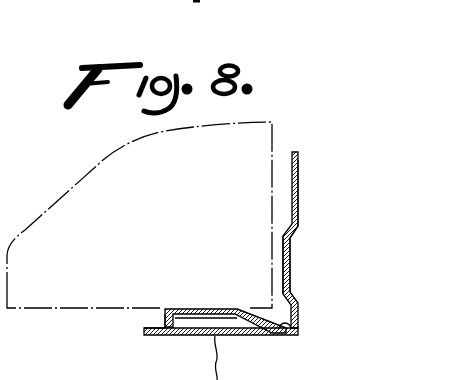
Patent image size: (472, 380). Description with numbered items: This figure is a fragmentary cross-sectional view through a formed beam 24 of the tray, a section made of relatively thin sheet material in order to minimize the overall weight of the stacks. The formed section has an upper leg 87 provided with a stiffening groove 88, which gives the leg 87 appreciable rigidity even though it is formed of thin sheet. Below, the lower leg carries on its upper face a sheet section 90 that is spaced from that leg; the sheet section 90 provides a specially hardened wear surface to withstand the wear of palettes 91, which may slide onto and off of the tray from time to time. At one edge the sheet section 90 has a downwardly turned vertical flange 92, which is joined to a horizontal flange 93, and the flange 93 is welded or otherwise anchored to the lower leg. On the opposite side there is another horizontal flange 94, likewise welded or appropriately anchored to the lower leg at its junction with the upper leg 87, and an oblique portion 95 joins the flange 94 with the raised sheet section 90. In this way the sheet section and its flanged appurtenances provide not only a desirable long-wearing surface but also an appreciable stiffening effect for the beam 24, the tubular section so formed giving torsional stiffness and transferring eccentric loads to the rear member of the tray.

The formed beam 24 is at (298, 167).
The upper leg 87 is at (299, 208).
The stiffening groove 88 is at (284, 256).
The sheet section 90 is at (190, 309).
The palettes 91 is at (99, 188).
The vertical flange 92 is at (183, 336).
The horizontal flange 93 is at (155, 327).
The horizontal flange 94 is at (294, 318).
The oblique portion 95 is at (268, 320).